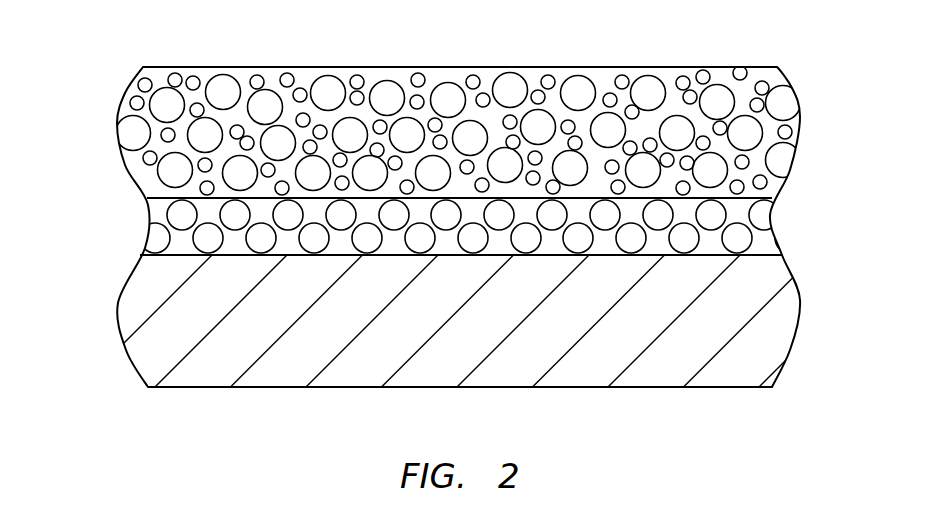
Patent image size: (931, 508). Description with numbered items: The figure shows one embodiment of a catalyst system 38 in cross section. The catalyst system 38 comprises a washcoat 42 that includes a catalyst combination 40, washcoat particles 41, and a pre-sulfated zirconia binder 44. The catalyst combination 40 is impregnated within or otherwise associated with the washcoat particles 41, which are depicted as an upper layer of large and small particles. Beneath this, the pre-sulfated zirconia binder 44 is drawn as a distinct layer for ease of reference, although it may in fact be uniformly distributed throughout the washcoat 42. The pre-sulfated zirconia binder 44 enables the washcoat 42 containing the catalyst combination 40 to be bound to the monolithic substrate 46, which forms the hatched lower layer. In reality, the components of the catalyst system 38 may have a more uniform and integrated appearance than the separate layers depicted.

The catalyst system 38 is at (803, 67).
The catalyst combination 40 is at (513, 73).
The washcoat particles 41 is at (358, 76).
The washcoat 42 is at (113, 67).
The pre-sulfated zirconia binder 44 is at (187, 243).
The monolithic substrate 46 is at (190, 322).